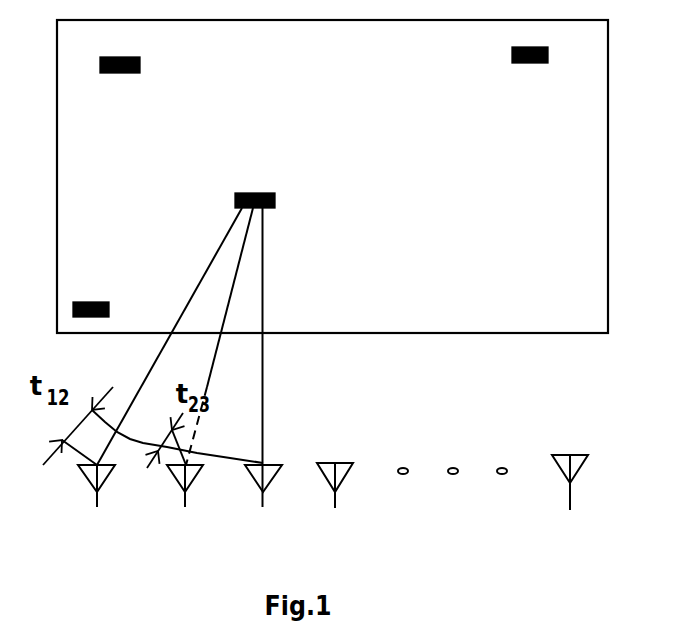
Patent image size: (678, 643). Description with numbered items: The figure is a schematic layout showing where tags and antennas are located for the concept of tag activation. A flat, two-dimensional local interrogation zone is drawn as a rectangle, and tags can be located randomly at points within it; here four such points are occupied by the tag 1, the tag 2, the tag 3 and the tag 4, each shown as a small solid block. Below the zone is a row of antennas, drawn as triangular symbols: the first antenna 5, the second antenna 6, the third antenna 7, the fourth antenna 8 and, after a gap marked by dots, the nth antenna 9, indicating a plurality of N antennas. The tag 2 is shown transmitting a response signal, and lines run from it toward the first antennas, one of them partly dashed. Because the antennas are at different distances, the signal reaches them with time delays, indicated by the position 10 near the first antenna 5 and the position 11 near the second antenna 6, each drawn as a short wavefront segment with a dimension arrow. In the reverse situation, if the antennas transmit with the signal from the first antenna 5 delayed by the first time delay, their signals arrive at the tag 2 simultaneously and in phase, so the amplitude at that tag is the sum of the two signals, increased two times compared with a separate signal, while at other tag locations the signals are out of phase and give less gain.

The tag 1 is at (91, 291).
The tag 2 is at (255, 184).
The tag 3 is at (120, 51).
The tag 4 is at (508, 50).
The antenna A1 5 is at (96, 523).
The antenna A2 6 is at (185, 523).
The antenna A3 7 is at (263, 523).
The antenna A4 8 is at (335, 522).
The antenna An 9 is at (570, 513).
The position 10 is at (41, 429).
The position 11 is at (183, 409).